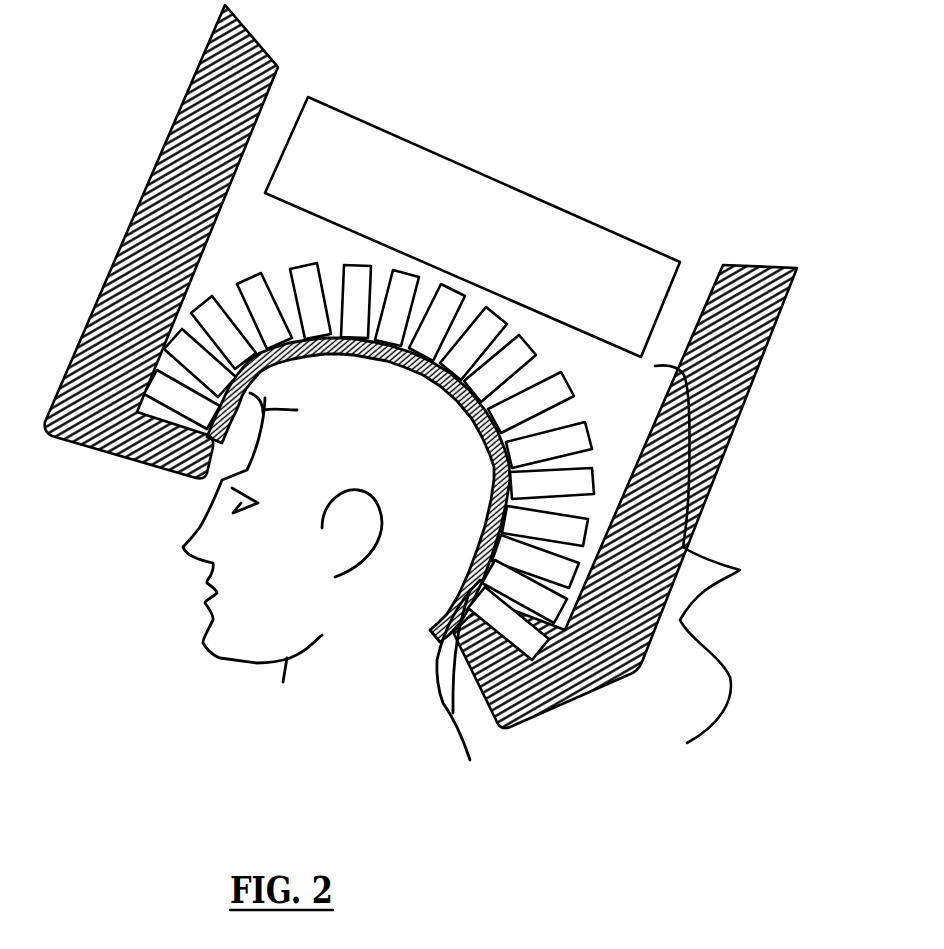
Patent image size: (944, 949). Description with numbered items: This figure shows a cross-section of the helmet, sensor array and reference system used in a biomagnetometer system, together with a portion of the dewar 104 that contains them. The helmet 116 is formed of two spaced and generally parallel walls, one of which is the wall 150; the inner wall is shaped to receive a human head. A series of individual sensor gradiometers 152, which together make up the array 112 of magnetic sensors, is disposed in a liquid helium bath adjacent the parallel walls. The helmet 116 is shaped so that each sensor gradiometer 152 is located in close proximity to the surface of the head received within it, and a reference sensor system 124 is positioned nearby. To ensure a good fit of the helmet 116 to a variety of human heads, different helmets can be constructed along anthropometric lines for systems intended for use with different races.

The dewar 104 is at (448, 366).
The array of magnetic sensors 112 is at (738, 554).
The helmet 116 is at (760, 368).
The reference sensor system 124 is at (487, 242).
The wall 150 is at (195, 325).
The sensor gradiometer 152 is at (312, 266).